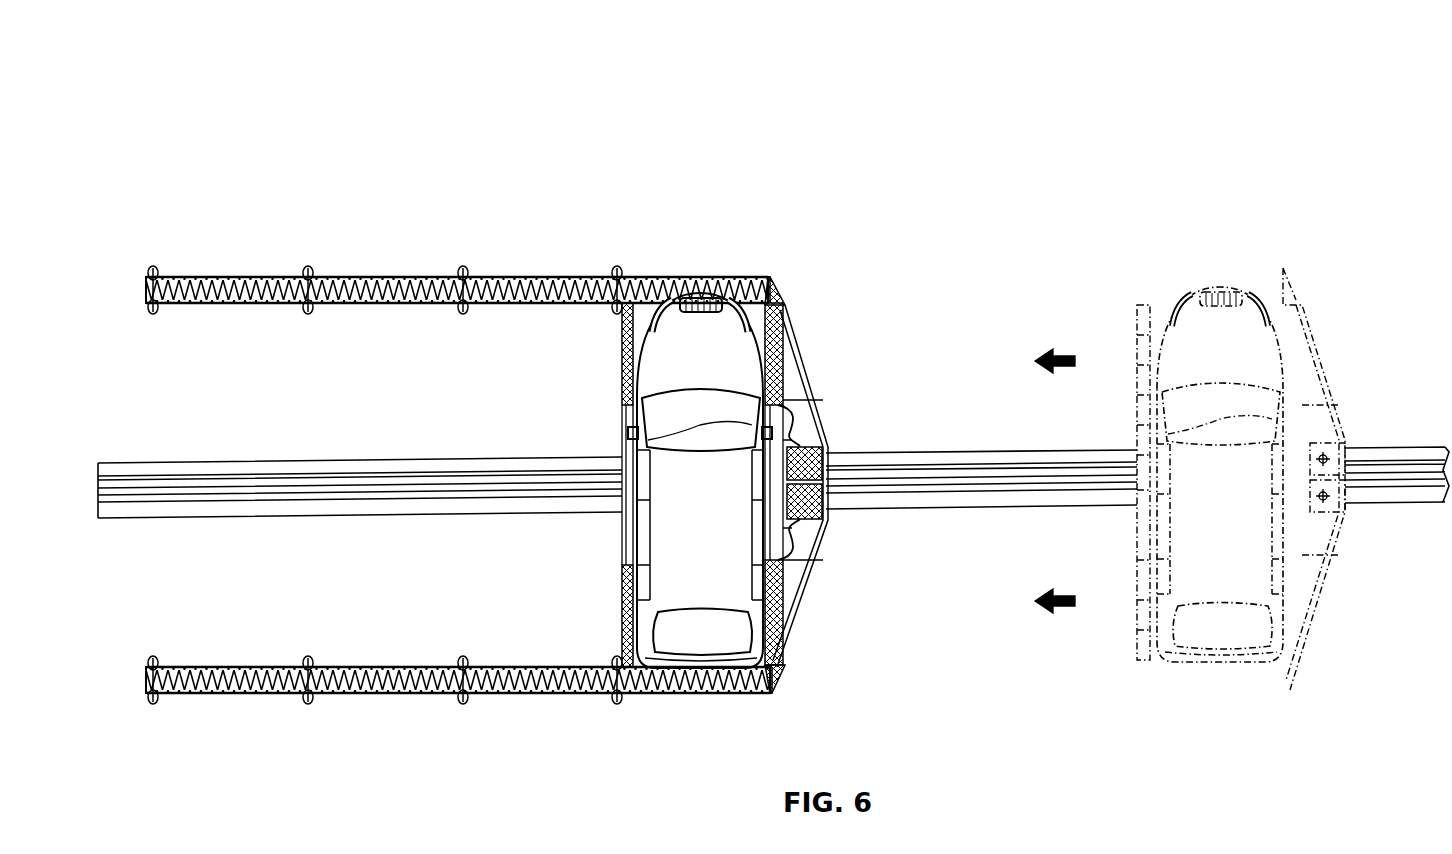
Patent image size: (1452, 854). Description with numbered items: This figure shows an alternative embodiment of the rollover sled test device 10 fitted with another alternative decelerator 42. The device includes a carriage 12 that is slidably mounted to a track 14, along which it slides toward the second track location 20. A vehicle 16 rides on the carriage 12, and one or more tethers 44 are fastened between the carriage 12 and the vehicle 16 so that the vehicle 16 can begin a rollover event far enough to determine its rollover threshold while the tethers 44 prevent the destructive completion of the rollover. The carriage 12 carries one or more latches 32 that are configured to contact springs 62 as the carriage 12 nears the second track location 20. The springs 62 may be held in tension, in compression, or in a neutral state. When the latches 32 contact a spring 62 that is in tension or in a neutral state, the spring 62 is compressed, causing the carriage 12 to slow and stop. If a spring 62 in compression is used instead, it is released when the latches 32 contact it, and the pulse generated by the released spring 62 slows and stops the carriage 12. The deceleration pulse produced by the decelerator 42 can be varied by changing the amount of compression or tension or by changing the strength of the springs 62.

The rollover sled test device 10 is at (1198, 168).
The carriage 12 is at (832, 378).
The track 14 is at (985, 483).
The vehicle 16 is at (715, 544).
The second track location 20 is at (360, 502).
The latches 32 is at (773, 283).
The decelerator 42 is at (782, 246).
The tethers 44 is at (800, 438).
The springs 62 is at (405, 277).